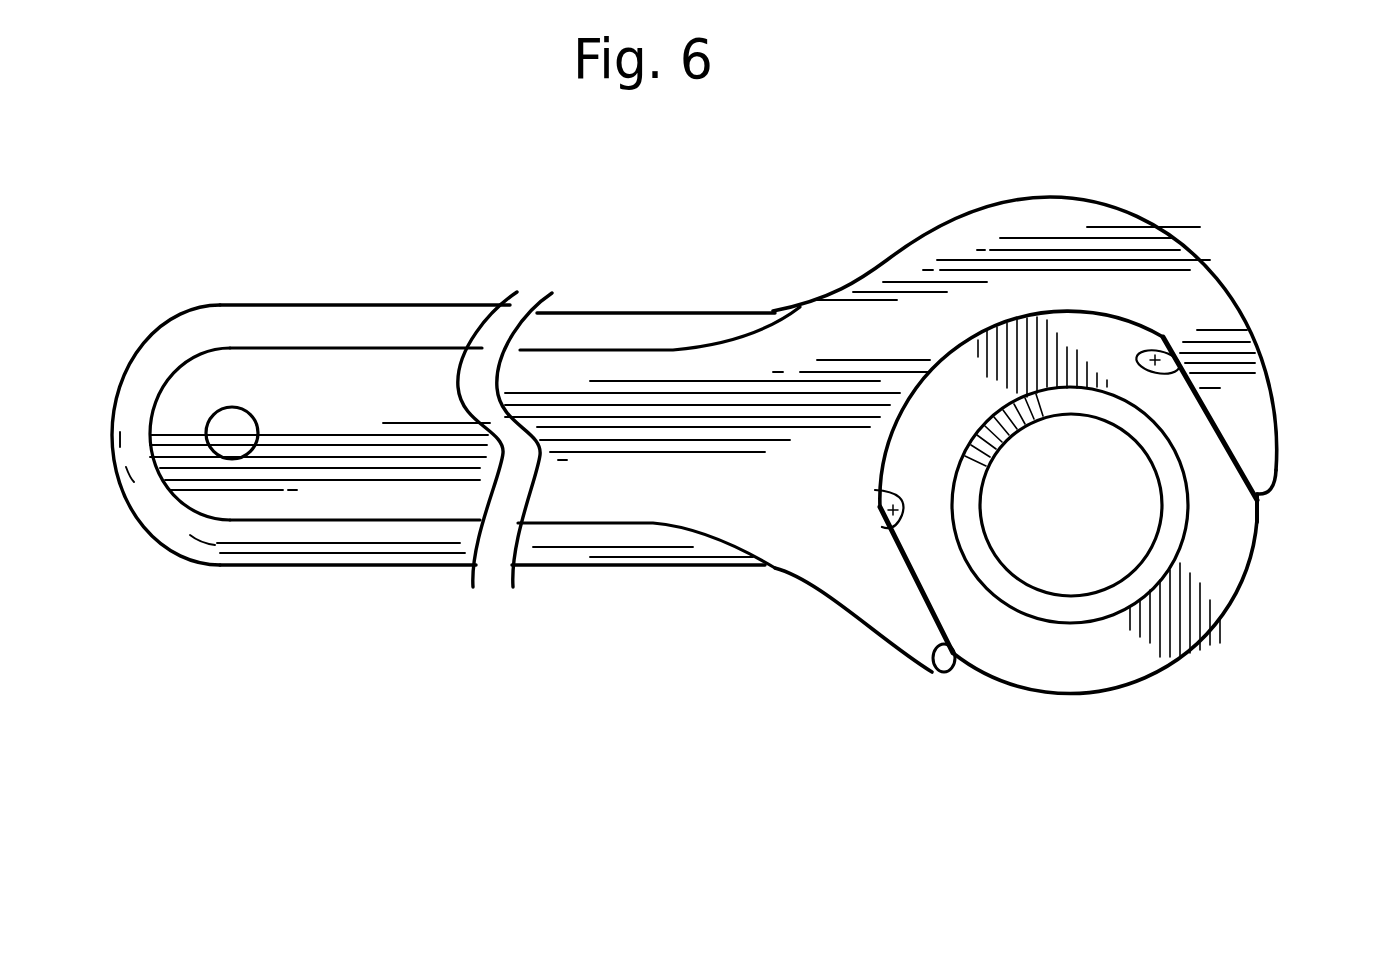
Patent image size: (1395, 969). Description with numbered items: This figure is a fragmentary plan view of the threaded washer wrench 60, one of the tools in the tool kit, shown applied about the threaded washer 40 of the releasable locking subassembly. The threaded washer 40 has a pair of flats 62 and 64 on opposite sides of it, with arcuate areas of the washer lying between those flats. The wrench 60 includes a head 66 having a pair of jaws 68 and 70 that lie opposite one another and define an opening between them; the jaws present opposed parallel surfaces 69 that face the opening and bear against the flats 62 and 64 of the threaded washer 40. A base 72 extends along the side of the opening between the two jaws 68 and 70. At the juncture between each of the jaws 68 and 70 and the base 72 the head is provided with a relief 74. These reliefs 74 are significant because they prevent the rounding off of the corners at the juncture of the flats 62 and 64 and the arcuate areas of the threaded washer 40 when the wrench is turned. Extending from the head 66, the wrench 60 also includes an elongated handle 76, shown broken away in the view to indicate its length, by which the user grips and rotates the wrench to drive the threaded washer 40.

The threaded washer 40 is at (1060, 663).
The threaded washer wrench 60 is at (572, 572).
The flat 62 is at (940, 673).
The flat 64 is at (1243, 460).
The head 66 is at (935, 240).
The jaw 68 is at (1257, 410).
The opposed parallel surfaces 69 is at (855, 600).
The jaw 70 is at (883, 623).
The base 72 is at (958, 348).
The relief 74 is at (875, 490).
The elongated handle 76 is at (350, 532).